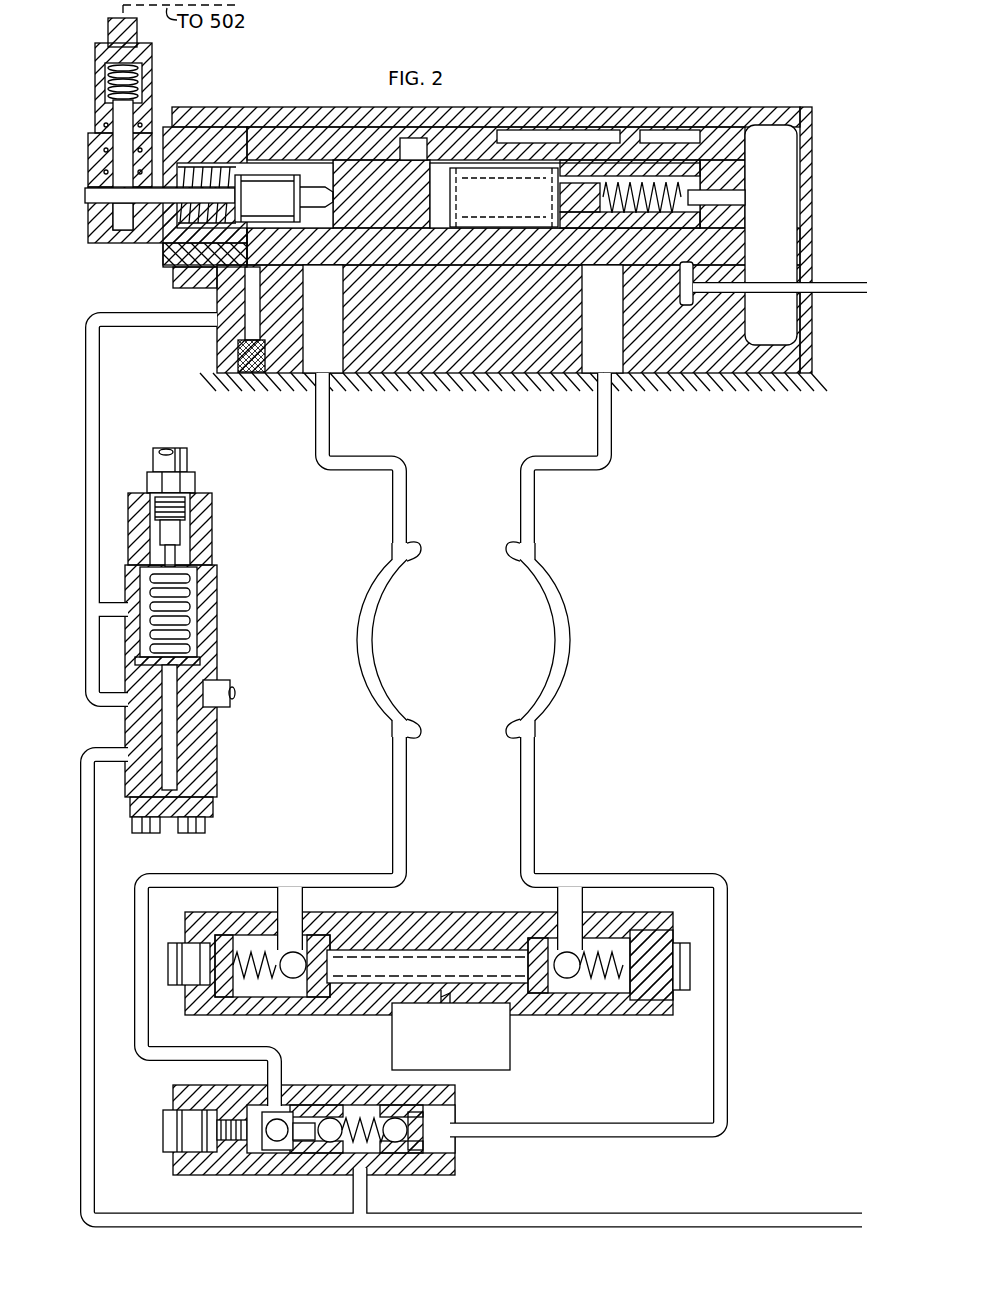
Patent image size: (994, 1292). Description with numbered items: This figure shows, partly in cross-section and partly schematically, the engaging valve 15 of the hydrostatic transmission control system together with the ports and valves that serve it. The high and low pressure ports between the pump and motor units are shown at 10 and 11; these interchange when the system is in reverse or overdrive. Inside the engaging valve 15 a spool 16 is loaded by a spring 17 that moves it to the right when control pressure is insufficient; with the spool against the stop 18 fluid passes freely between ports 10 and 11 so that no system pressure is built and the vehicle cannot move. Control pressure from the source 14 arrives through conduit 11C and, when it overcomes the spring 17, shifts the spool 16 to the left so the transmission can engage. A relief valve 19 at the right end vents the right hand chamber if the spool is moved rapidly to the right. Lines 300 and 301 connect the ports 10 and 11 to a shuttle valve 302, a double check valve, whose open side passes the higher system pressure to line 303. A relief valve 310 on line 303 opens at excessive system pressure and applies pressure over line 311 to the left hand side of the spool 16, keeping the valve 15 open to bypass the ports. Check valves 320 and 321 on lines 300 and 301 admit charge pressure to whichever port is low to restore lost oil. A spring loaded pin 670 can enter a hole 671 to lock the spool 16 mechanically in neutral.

The engaging valve 15 is at (522, 108).
The spool 16 is at (348, 177).
The spring 17 is at (197, 170).
The stop 18 is at (633, 160).
The relief valve 19 is at (667, 160).
The spring loaded pin 670 is at (130, 33).
The hole 671 is at (122, 217).
The conduit 11C is at (830, 285).
The relief valve 310 is at (227, 599).
The line 311 is at (93, 642).
The high pressure port 10 is at (372, 612).
The low pressure port 11 is at (545, 596).
The line 300 is at (401, 805).
The line 301 is at (532, 812).
The check valve 320 is at (317, 940).
The check valve 321 is at (537, 937).
The source 14 is at (502, 1033).
The shuttle valve 302 is at (338, 1108).
The system pressure line 303 is at (90, 1097).